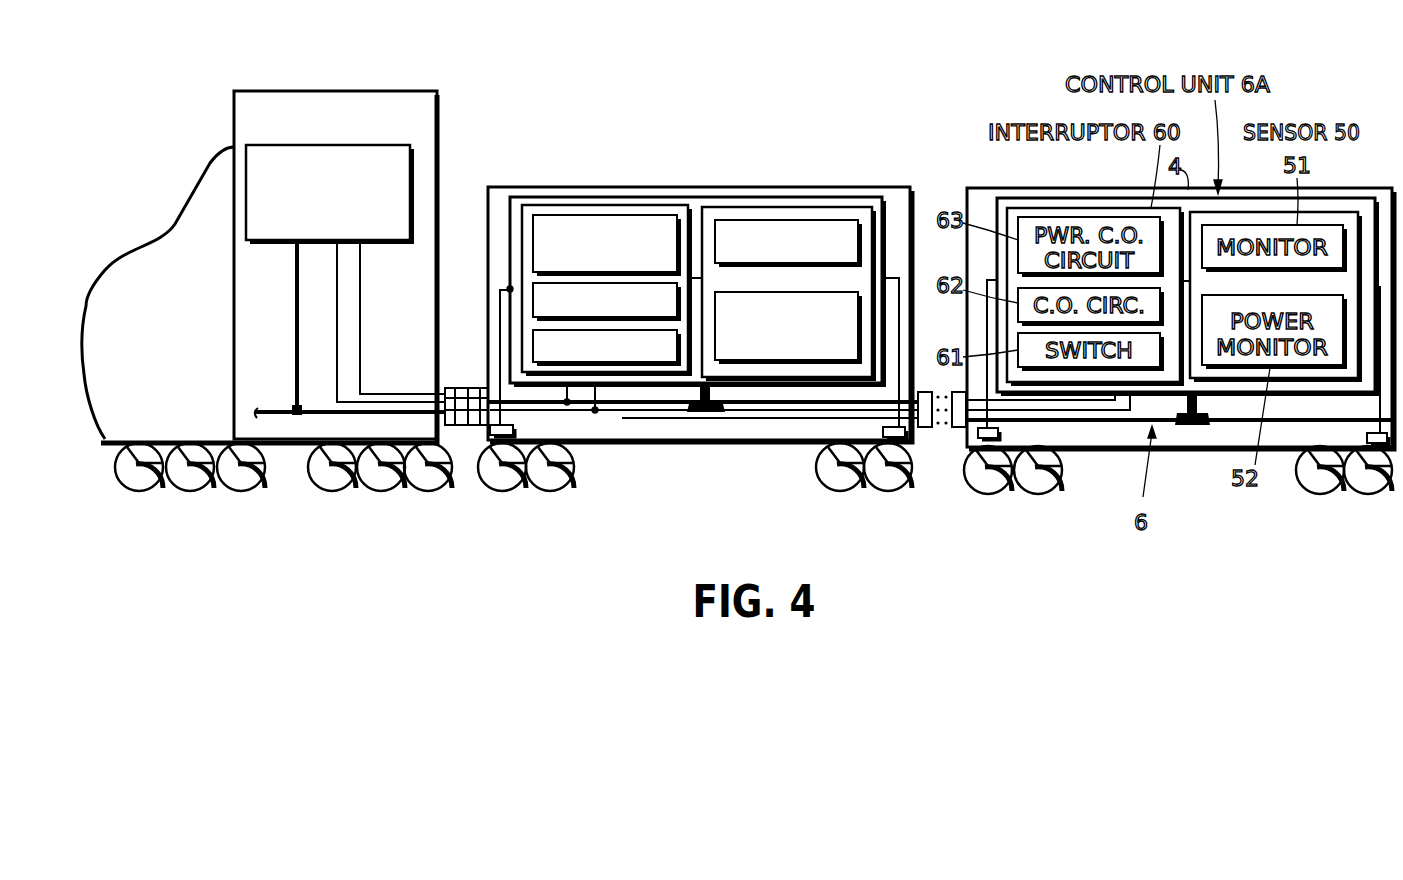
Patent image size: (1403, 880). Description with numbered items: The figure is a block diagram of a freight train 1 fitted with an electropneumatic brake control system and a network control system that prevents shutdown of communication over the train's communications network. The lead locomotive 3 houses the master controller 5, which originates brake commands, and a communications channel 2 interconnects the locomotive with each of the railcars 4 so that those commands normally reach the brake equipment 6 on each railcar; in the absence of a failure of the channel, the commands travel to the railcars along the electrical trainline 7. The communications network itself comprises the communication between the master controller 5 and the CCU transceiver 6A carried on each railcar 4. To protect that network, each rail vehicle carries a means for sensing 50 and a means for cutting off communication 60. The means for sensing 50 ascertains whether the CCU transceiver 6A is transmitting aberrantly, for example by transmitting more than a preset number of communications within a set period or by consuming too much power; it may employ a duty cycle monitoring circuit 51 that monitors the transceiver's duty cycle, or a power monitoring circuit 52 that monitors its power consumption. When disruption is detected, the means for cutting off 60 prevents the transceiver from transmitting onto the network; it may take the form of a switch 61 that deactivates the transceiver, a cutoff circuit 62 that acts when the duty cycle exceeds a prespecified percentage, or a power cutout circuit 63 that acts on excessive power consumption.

The freight train 1 is at (923, 126).
The communications channel 2 is at (741, 425).
The lead locomotive 3 is at (371, 78).
The railcar 4 is at (700, 187).
The master controller 5 is at (283, 145).
The brake equipment 6 is at (675, 428).
The electrical trainline 7 is at (585, 415).
The CCU transceiver 6A is at (730, 190).
The means for sensing 50 is at (841, 220).
The duty cycle monitoring circuit 51 is at (858, 242).
The power monitoring circuit 52 is at (858, 327).
The means for cutting off communication 60 is at (653, 206).
The switch 61 is at (533, 345).
The cutoff circuit 62 is at (533, 298).
The power cutout circuit 63 is at (533, 240).